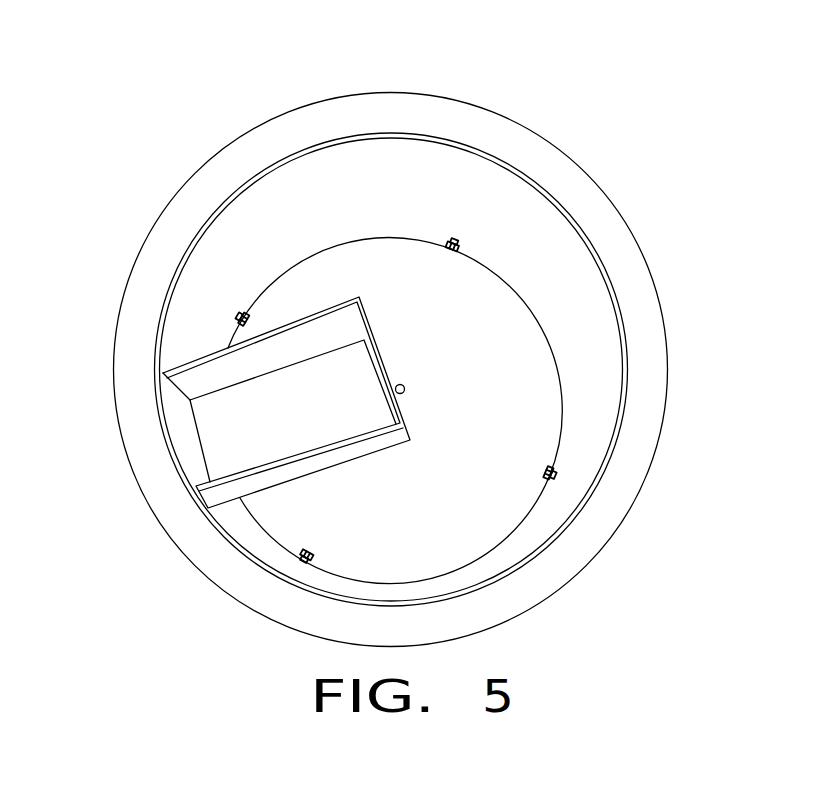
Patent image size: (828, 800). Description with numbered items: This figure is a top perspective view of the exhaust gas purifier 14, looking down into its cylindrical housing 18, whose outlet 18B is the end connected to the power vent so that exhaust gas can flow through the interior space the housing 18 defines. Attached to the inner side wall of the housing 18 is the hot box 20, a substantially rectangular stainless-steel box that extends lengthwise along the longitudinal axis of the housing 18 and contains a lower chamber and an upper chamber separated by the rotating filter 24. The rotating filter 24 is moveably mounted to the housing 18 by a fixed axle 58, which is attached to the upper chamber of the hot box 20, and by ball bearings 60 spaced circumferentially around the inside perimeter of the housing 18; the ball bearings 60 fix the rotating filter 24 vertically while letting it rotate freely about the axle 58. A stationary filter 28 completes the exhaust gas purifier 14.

The exhaust gas purifier 14 is at (598, 167).
The housing 18 is at (413, 93).
The outlet 18B is at (353, 150).
The hot box 20 is at (272, 482).
The rotating filter 24 is at (307, 280).
The stationary filter 28 is at (252, 408).
The axle 58 is at (405, 383).
The ball bearings 60 is at (242, 312).